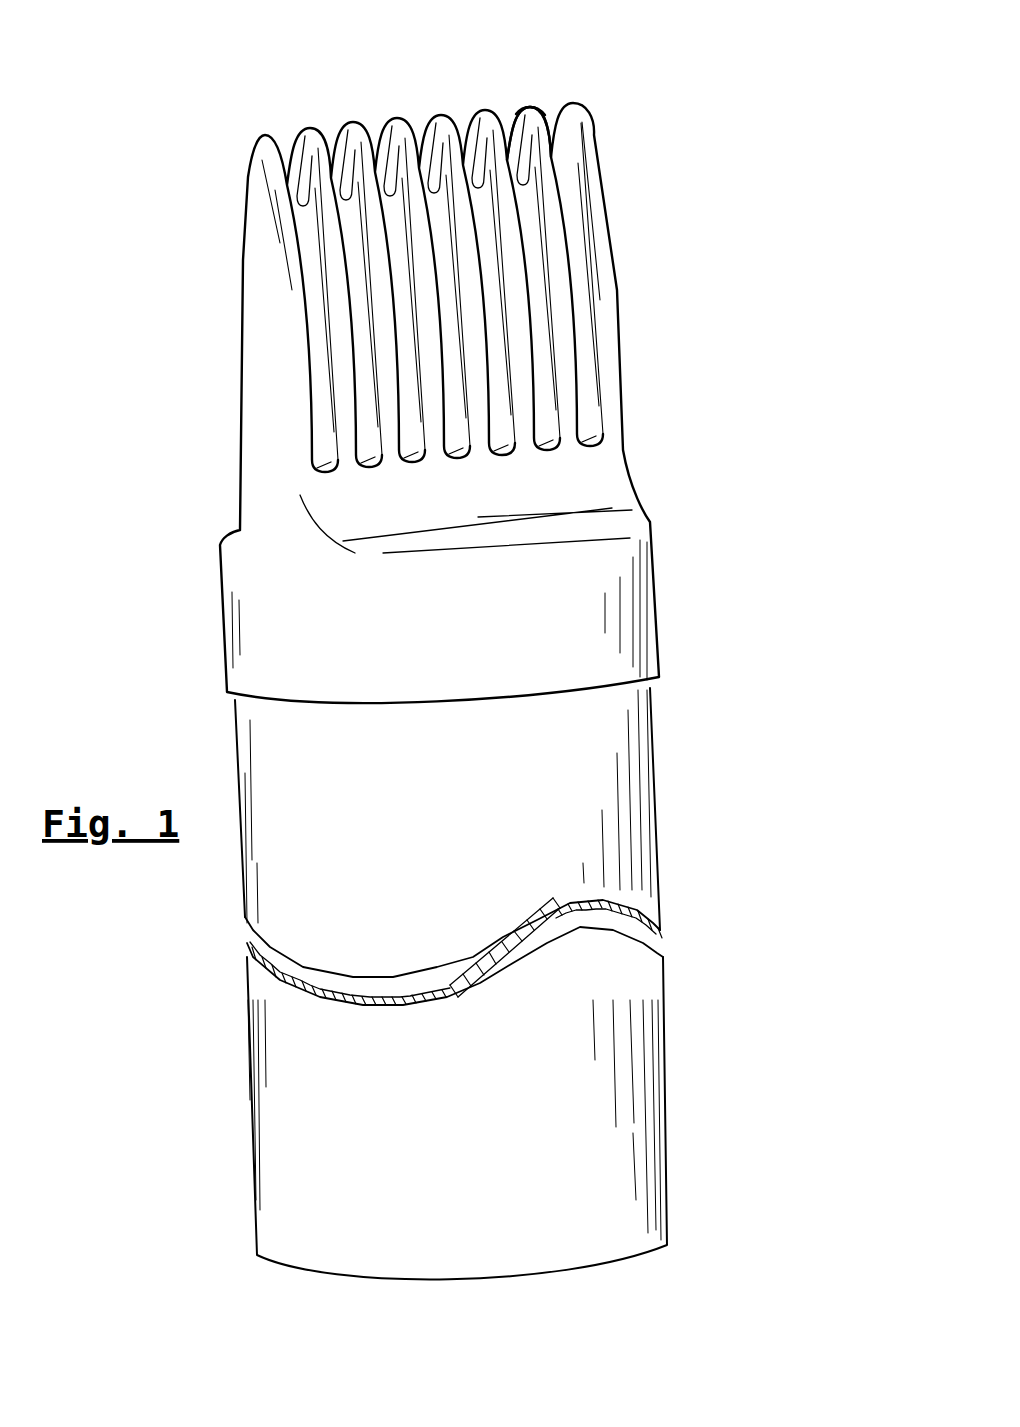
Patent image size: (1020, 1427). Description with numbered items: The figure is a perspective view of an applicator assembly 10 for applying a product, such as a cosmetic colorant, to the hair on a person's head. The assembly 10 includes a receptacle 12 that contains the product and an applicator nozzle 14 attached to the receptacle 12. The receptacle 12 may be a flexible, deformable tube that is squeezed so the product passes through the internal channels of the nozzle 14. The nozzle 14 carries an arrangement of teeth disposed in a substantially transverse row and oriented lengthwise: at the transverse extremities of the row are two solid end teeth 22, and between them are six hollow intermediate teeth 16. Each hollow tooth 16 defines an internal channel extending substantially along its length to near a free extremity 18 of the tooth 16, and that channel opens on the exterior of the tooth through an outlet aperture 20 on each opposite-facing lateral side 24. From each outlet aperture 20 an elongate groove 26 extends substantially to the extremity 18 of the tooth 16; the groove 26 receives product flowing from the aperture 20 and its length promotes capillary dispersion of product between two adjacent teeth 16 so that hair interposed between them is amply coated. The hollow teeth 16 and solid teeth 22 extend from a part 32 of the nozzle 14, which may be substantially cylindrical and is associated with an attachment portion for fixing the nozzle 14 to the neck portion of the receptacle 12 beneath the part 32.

The applicator assembly 10 is at (136, 214).
The receptacle 12 is at (580, 778).
The applicator nozzle 14 is at (676, 595).
The hollow intermediate tooth 16 is at (565, 253).
The free extremity 18 is at (527, 108).
The outlet aperture 20 is at (518, 178).
The solid end tooth 22 is at (258, 312).
The lateral side 24 is at (540, 318).
The elongate groove 26 is at (520, 126).
The part 32 is at (281, 615).